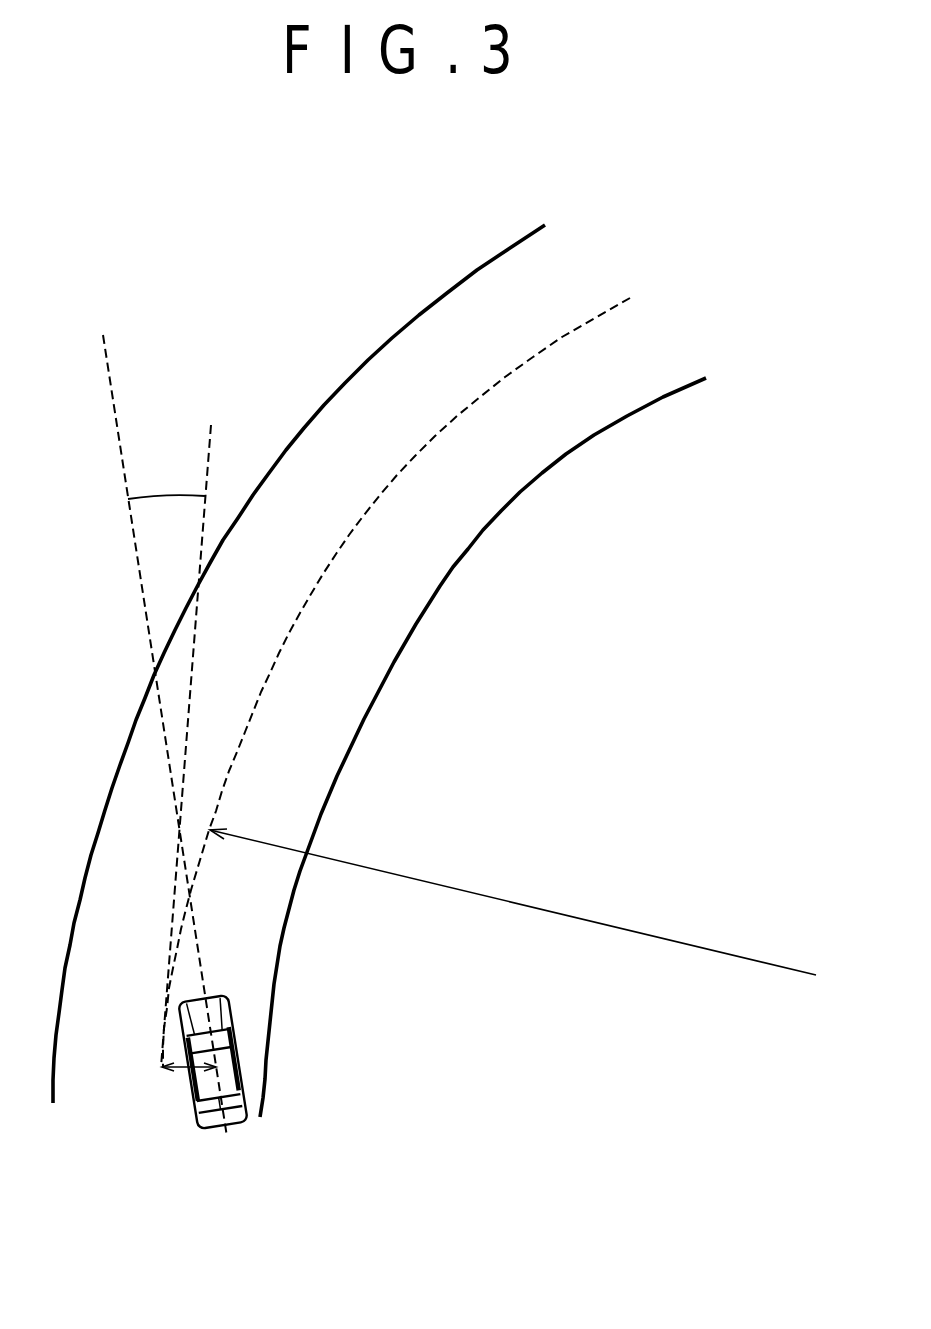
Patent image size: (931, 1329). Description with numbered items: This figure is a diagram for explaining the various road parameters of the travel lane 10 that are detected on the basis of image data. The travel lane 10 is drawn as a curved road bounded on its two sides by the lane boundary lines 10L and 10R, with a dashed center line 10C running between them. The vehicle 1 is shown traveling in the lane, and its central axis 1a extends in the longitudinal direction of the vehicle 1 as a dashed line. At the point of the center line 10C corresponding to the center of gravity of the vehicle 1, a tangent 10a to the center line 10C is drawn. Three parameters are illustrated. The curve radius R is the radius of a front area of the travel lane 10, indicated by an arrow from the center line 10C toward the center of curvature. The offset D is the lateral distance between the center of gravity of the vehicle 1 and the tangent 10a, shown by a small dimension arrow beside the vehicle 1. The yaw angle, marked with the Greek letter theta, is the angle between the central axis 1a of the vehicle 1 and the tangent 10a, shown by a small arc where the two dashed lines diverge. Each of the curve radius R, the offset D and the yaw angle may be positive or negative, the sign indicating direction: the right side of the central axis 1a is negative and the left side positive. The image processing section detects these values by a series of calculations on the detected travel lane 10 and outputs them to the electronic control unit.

The vehicle 1 is at (234, 1053).
The central axis 1a is at (108, 382).
The travel lane 10 is at (414, 666).
The tangent 10a is at (213, 440).
The center line 10C is at (603, 312).
The left lane boundary line 10L is at (442, 296).
The right lane boundary line 10R is at (632, 414).
The curve radius R is at (513, 902).
The offset D is at (189, 1084).